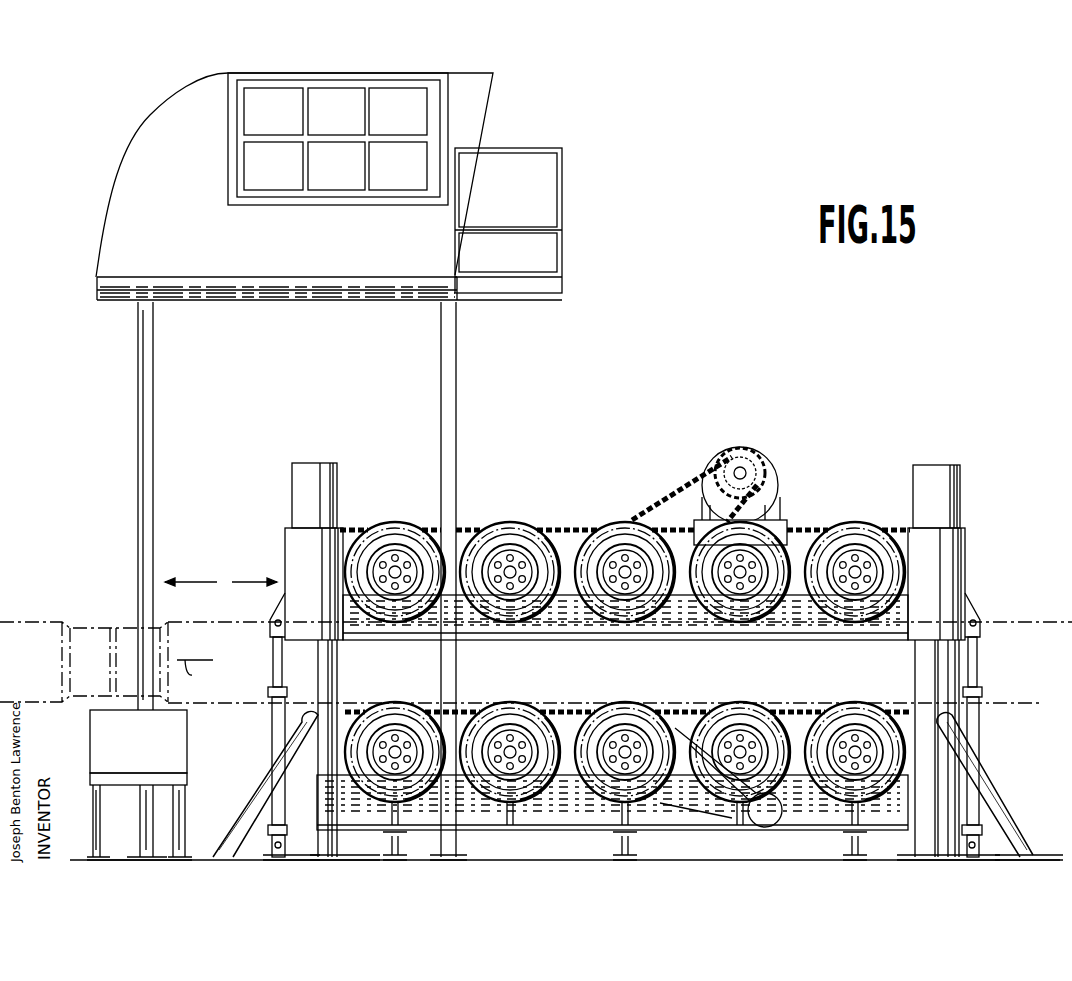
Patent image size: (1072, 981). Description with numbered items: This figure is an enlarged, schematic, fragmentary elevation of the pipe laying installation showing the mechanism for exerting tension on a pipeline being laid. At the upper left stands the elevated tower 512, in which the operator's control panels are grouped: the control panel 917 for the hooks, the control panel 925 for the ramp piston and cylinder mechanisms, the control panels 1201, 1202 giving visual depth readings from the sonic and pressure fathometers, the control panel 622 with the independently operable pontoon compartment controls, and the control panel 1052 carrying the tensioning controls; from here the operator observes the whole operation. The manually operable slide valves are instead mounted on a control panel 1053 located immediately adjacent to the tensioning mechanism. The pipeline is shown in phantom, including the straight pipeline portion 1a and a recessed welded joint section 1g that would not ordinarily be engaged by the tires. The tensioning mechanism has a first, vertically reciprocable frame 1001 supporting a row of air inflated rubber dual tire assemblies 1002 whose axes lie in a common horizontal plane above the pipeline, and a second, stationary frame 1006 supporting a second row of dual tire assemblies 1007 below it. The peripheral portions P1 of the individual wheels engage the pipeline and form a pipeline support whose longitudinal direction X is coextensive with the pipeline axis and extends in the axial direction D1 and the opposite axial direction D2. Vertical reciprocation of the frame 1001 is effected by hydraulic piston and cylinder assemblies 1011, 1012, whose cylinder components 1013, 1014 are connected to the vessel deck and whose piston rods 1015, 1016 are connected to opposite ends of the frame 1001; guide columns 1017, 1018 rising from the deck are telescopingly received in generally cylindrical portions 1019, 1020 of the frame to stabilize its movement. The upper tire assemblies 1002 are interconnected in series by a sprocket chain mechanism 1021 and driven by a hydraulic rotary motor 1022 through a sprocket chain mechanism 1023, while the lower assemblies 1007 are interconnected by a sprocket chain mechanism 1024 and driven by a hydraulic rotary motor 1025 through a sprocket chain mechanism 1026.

The elevated tower 512 is at (281, 251).
The control panel 917 is at (288, 121).
The control panel 925 is at (348, 121).
The control panel 1201 is at (413, 121).
The control panel 622 is at (290, 175).
The control panel 1052 is at (353, 175).
The control panel 1202 is at (412, 175).
The control panel 1053 is at (156, 754).
The recessed pipeline section 1g is at (100, 622).
The straight pipeline portion 1a is at (1035, 693).
The axial direction D1 is at (191, 592).
The opposite axial direction D2 is at (254, 592).
The longitudinal direction X is at (195, 672).
The guide column 1018 is at (337, 507).
The generally cylindrical portion 1020 is at (287, 548).
The guide column 1017 is at (945, 497).
The generally cylindrical portion 1019 is at (955, 570).
The first vertically reciprocable frame 1001 is at (572, 625).
The second stationary frame 1006 is at (665, 815).
The sprocket chain mechanism 1021 is at (570, 530).
The sprocket chain mechanism 1024 is at (472, 710).
The hydraulically operated rotary motor 1022 is at (765, 463).
The sprocket chain mechanism 1023 is at (676, 495).
The peripheral portion P1 is at (845, 704).
The dual tire assembly 1002 is at (840, 525).
The dual tire assembly 1007 is at (745, 702).
The sprocket chain mechanism 1026 is at (687, 730).
The hydraulically operated rotary motor 1025 is at (783, 826).
The piston rod 1016 is at (275, 655).
The hydraulically operated piston and cylinder assembly 1012 is at (272, 721).
The cylinder component 1014 is at (277, 742).
The piston rod 1015 is at (975, 655).
The hydraulically operated piston and cylinder assembly 1011 is at (978, 725).
The cylinder component 1013 is at (978, 755).